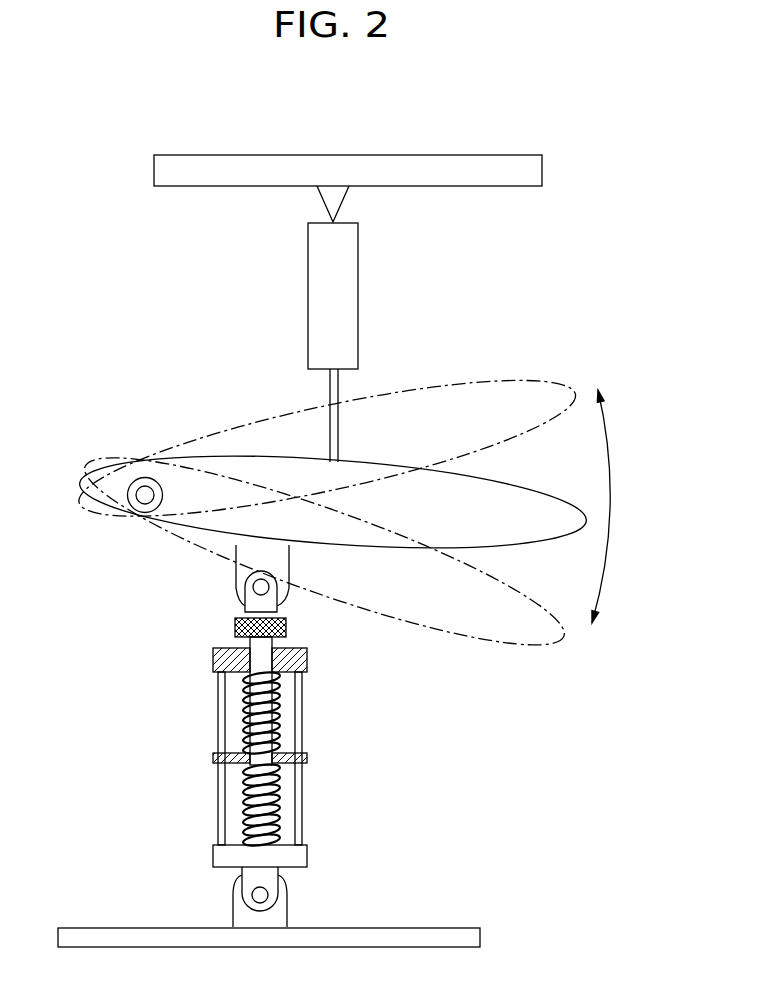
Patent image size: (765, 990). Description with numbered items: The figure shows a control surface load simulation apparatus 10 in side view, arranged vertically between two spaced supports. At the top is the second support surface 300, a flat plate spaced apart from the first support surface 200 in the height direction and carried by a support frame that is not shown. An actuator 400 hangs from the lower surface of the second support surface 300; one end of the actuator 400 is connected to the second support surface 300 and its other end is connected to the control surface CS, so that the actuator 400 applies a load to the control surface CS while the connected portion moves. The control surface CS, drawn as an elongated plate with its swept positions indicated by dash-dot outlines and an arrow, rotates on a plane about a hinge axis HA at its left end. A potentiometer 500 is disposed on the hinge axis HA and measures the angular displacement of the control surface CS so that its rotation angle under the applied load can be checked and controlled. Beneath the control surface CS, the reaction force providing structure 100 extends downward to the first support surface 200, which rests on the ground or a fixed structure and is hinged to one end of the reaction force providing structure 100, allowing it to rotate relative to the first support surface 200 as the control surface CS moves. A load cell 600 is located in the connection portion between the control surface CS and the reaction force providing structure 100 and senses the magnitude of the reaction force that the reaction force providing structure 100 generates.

The control surface load simulation apparatus 10 is at (127, 125).
The reaction force providing structure 100 is at (335, 776).
The first support surface 200 is at (480, 937).
The second support surface 300 is at (542, 169).
The actuator 400 is at (358, 294).
The potentiometer 500 is at (143, 513).
The load cell 600 is at (234, 627).
The hinge axis HA is at (145, 478).
The control surface CS is at (584, 522).